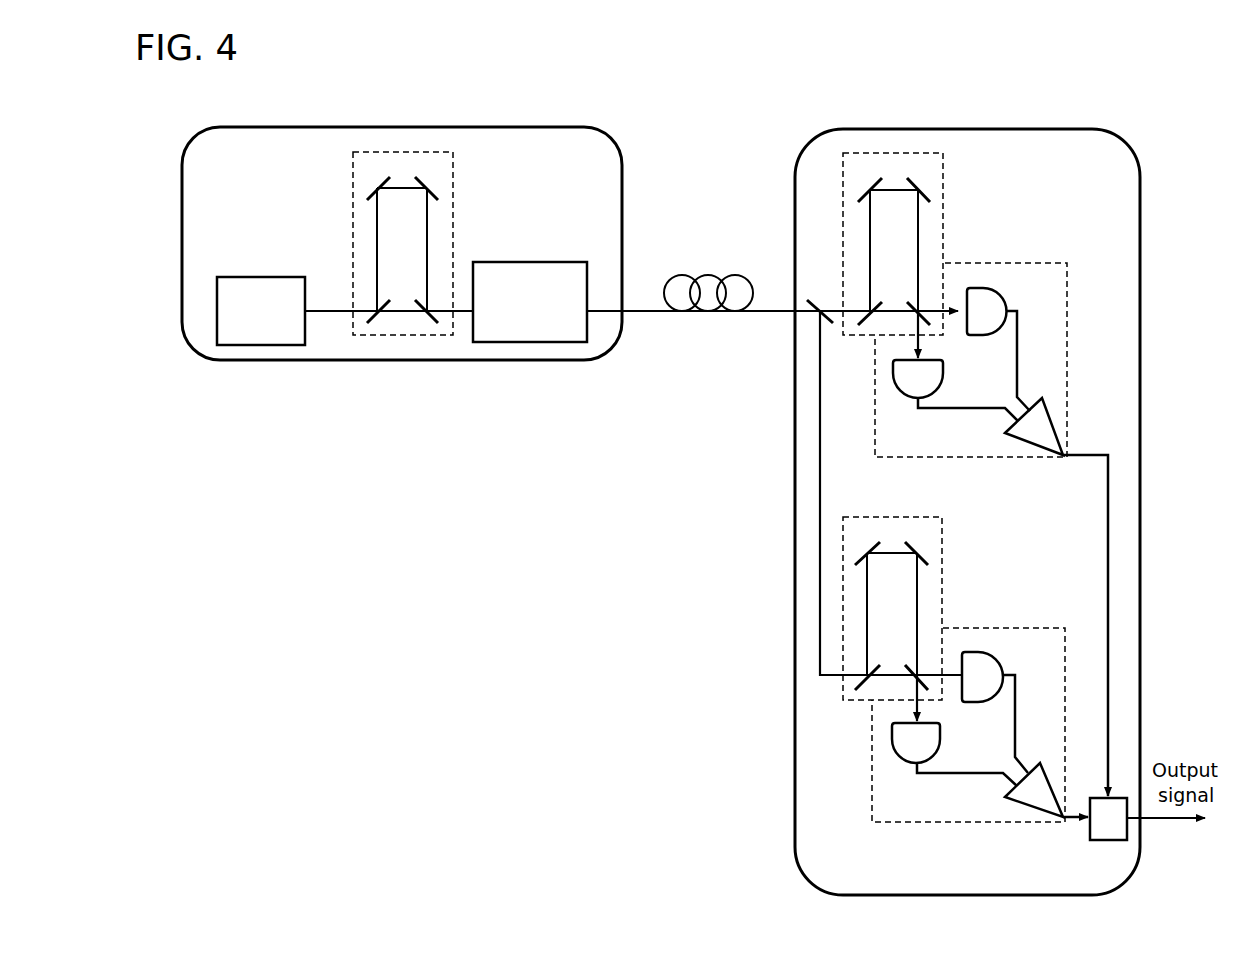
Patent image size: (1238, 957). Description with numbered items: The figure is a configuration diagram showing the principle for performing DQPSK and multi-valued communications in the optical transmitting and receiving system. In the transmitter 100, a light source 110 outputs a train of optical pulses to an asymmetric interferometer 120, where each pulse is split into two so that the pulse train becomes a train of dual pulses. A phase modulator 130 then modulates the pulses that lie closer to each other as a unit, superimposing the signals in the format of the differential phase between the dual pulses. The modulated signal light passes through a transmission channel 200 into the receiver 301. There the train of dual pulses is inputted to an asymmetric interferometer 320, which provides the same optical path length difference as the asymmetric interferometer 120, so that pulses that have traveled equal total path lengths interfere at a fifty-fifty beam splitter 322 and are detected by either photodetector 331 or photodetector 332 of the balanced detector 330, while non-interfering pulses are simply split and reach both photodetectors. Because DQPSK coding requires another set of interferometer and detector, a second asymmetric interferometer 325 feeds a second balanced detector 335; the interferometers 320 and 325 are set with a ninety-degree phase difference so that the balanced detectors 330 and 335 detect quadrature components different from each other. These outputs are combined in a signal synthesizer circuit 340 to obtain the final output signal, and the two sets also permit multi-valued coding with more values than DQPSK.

The transmitter 100 is at (495, 127).
The light source 110 is at (260, 277).
The asymmetric interferometer 120 is at (453, 215).
The phase modulator 130 is at (527, 342).
The transmission channel 200 is at (683, 275).
The receiver 301 is at (1028, 128).
The asymmetric interferometer 320 is at (945, 212).
The beam splitter 322 is at (922, 300).
The asymmetric interferometer 325 is at (943, 588).
The balanced detector 330 is at (978, 511).
The photodetector 331 is at (993, 287).
The photodetector 332 is at (892, 373).
The balanced detector 335 is at (1067, 667).
The signal synthesizer circuit 340 is at (1088, 832).